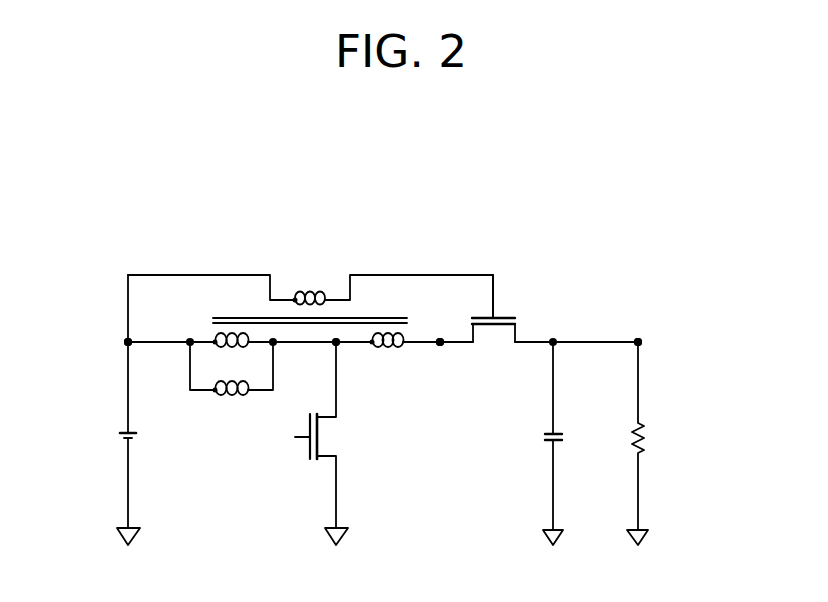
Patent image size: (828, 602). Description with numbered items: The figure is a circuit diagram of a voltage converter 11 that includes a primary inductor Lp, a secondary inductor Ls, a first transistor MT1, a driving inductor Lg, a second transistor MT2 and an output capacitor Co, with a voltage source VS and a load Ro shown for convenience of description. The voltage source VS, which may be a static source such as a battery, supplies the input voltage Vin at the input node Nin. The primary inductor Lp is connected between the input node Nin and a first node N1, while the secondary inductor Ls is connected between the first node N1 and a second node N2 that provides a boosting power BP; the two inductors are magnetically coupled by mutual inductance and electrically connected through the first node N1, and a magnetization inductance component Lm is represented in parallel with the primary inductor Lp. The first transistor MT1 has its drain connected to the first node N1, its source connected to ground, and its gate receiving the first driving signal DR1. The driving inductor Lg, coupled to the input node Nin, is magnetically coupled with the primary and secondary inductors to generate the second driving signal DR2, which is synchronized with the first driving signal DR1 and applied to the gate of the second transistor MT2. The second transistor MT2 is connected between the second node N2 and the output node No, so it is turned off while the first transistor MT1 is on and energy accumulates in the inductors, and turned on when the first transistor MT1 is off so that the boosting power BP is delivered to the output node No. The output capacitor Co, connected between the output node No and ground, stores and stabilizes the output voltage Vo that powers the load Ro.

The voltage converter 11 is at (397, 175).
The input voltage Vin is at (107, 341).
The input node Nin is at (128, 346).
The voltage source VS is at (142, 438).
The driving inductor Lg is at (309, 284).
The primary inductor Lp is at (231, 355).
The magnetization inductance component Lm is at (231, 381).
The secondary inductor Ls is at (387, 353).
The first node N1 is at (338, 346).
The second node N2 is at (440, 346).
The boosting power BP is at (442, 329).
The first transistor MT1 is at (334, 435).
The first driving signal DR1 is at (282, 440).
The second transistor MT2 is at (493, 338).
The second driving signal DR2 is at (515, 296).
The output capacitor Co is at (568, 436).
The load Ro is at (654, 436).
The output voltage Vo is at (650, 332).
The output node No is at (641, 345).